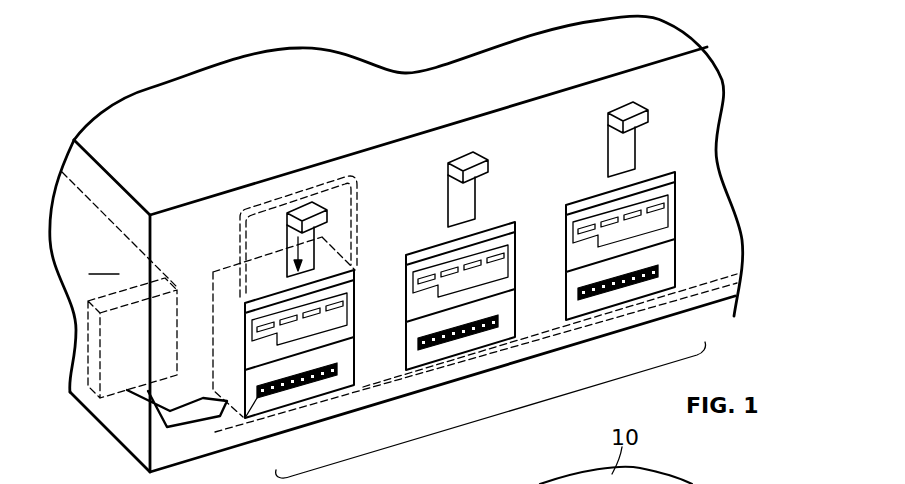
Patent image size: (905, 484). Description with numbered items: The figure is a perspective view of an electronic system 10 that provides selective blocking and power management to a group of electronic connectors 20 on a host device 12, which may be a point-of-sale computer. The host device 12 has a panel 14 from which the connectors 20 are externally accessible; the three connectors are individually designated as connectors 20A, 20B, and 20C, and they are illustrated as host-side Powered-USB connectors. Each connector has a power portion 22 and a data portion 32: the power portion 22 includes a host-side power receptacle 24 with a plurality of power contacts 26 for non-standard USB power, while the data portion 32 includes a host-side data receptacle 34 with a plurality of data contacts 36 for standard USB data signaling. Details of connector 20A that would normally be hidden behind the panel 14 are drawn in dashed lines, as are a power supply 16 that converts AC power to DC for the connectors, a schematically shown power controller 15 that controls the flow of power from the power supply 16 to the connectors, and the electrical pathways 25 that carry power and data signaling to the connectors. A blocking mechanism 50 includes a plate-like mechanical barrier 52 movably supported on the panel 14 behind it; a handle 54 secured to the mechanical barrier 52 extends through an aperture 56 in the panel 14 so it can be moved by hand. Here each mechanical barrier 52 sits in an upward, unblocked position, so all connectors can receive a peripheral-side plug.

The electronic system 10 is at (685, 15).
The host device 12 is at (230, 75).
The panel 14 is at (700, 74).
The power controller 15 is at (95, 350).
The power supply 16 is at (88, 232).
The group of electronic connectors 20 is at (491, 410).
The connector 20A is at (213, 263).
The connector 20B is at (496, 214).
The connector 20C is at (656, 167).
The power portion 22 is at (321, 337).
The host-side power receptacle 24 is at (339, 271).
The electrical pathways 25 is at (185, 403).
The power contacts 26 is at (338, 312).
The data portion 32 is at (355, 337).
The host-side data receptacle 34 is at (305, 385).
The data contacts 36 is at (257, 397).
The blocking mechanism 50 is at (313, 179).
The mechanical barrier 52 is at (357, 192).
The handle 54 is at (316, 205).
The aperture 56 is at (287, 237).